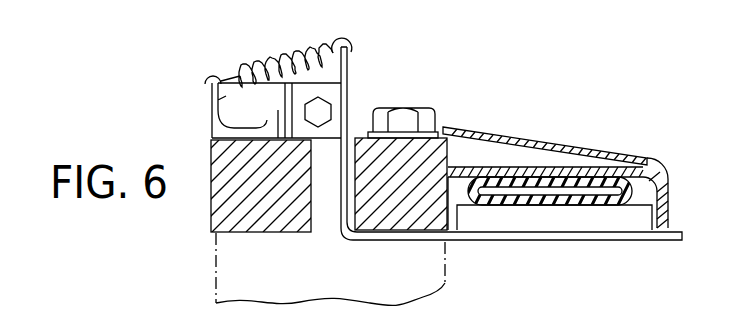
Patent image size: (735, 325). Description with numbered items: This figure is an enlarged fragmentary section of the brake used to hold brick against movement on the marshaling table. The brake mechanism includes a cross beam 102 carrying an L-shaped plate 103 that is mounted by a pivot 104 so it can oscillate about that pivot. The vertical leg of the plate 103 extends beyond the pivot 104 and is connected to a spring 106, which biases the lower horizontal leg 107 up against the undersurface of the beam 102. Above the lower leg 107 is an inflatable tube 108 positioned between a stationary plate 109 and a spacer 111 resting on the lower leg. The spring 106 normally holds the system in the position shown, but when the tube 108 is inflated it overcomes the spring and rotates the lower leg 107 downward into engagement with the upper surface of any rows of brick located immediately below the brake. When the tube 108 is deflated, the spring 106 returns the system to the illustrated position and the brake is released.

The cross beam 102 is at (218, 203).
The L-shaped plate 103 is at (524, 244).
The pivot 104 is at (320, 110).
The spring 106 is at (277, 58).
The lower horizontal leg 107 is at (420, 240).
The inflatable tube 108 is at (522, 200).
The stationary plate 109 is at (537, 172).
The spacer 111 is at (592, 220).